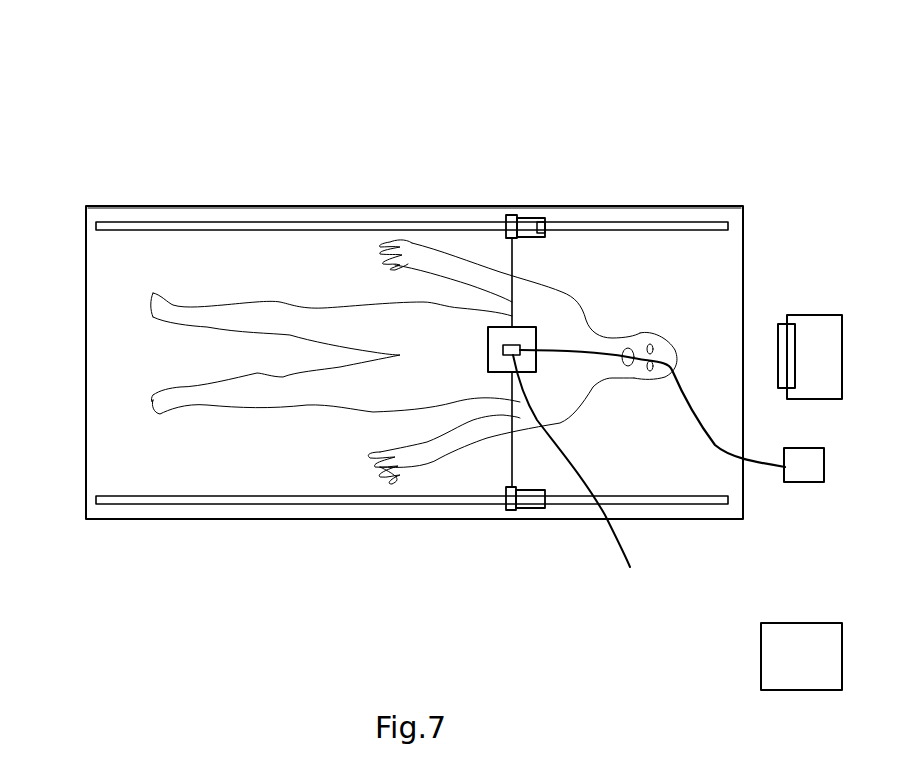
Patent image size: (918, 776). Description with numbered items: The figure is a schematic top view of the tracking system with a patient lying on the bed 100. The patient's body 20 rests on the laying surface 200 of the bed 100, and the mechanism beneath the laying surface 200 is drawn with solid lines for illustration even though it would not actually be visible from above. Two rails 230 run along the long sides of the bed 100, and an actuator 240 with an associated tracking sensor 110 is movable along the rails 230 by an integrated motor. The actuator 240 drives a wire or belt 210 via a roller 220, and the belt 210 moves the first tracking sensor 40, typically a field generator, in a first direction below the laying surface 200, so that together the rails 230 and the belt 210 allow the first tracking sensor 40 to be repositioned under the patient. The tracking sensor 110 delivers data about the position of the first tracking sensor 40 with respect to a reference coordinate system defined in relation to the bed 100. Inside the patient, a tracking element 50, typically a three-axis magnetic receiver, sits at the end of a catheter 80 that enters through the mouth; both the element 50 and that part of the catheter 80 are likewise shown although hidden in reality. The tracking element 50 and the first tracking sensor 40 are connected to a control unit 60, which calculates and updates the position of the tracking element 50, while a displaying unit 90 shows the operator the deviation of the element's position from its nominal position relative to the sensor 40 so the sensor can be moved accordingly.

The body 20 is at (162, 290).
The first tracking sensor 40 is at (500, 372).
The tracking element 50 is at (649, 472).
The control unit 60 is at (761, 647).
The catheter 80 is at (697, 432).
The unit 90 is at (785, 350).
The bed 100 is at (130, 511).
The tracking sensor 110 is at (545, 217).
The laying surface 200 is at (110, 418).
The belt 210 is at (512, 272).
The roller 220 is at (507, 213).
The rails 230 is at (378, 222).
The actuator 240 is at (527, 217).